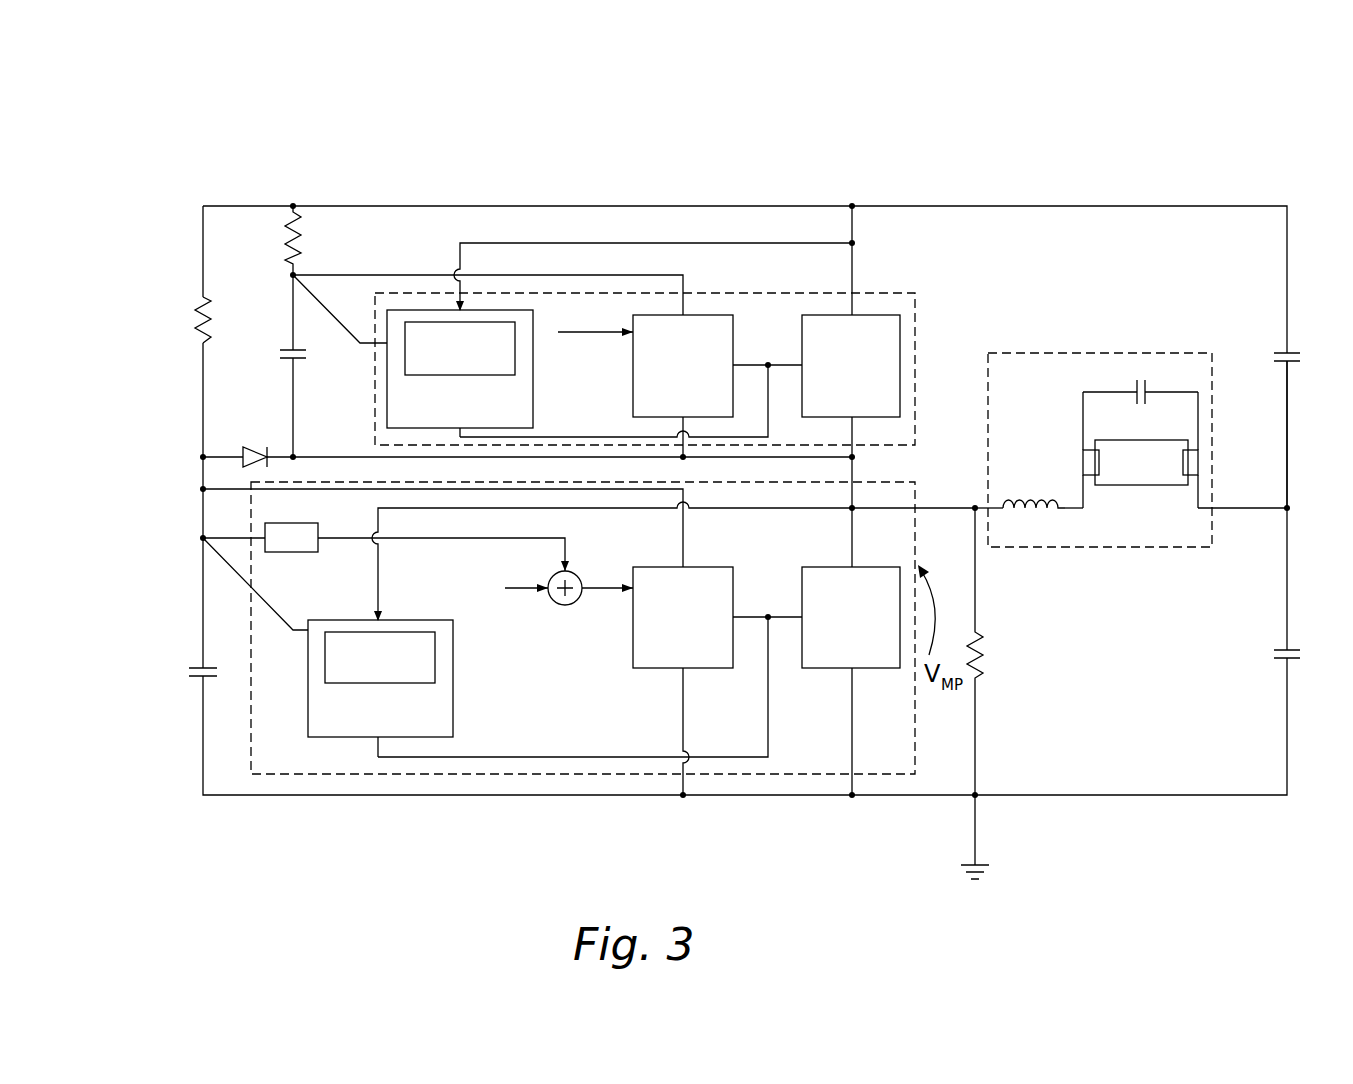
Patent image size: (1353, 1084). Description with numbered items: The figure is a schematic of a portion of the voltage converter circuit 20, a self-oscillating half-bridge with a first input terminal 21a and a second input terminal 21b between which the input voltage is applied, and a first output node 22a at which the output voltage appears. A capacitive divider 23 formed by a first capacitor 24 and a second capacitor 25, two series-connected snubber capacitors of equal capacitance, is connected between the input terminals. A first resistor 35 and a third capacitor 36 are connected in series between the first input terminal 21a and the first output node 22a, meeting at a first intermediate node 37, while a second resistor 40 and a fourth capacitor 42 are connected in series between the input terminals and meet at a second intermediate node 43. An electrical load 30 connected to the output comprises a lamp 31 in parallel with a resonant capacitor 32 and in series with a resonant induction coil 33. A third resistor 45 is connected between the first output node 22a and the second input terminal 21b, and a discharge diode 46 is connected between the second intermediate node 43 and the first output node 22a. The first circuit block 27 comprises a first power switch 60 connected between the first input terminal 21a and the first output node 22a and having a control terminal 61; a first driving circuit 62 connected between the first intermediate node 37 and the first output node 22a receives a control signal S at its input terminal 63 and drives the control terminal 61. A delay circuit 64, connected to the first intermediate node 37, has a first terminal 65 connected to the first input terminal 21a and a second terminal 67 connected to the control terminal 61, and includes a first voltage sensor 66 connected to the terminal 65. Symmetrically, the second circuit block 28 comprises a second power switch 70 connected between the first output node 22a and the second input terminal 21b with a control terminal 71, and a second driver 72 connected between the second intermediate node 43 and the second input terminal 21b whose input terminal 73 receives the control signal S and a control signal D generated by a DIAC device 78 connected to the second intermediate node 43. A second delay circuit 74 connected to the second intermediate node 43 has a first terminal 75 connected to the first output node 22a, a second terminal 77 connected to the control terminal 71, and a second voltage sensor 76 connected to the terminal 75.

The voltage converter circuit 20 is at (947, 154).
The first input terminal 21a is at (852, 243).
The second input terminal 21b is at (852, 795).
The first output node 22a is at (852, 457).
The capacitive divider 23 is at (1321, 457).
The first capacitor 24 is at (1280, 351).
The second capacitor 25 is at (1275, 650).
The first circuit block 27 is at (715, 293).
The second circuit block 28 is at (797, 775).
The electrical load 30 is at (1185, 540).
The lamp 31 is at (1140, 475).
The resonant capacitor 32 is at (1137, 385).
The resonant induction coil 33 is at (1048, 520).
The first resistor 35 is at (290, 258).
The third capacitor 36 is at (283, 355).
The first intermediate node 37 is at (293, 275).
The second resistor 40 is at (198, 318).
The fourth capacitor 42 is at (195, 681).
The second intermediate node 43 is at (203, 538).
The third resistor 45 is at (975, 677).
The discharge diode 46 is at (258, 453).
The first power switch 60 is at (890, 340).
The control terminal 61 is at (781, 363).
The first driving circuit 62 is at (633, 407).
The input terminal 63 is at (578, 337).
The delay circuit 64 is at (407, 413).
The first terminal 65 is at (458, 260).
The first voltage sensor 66 is at (410, 362).
The second terminal 67 is at (768, 400).
The second power switch 70 is at (825, 655).
The control terminal 71 is at (786, 617).
The second driver 72 is at (632, 643).
The input terminal 73 is at (517, 590).
The second delay circuit 74 is at (330, 710).
The first terminal 75 is at (775, 508).
The second voltage sensor 76 is at (333, 650).
The second terminal 77 is at (575, 757).
The DIAC device 78 is at (297, 545).